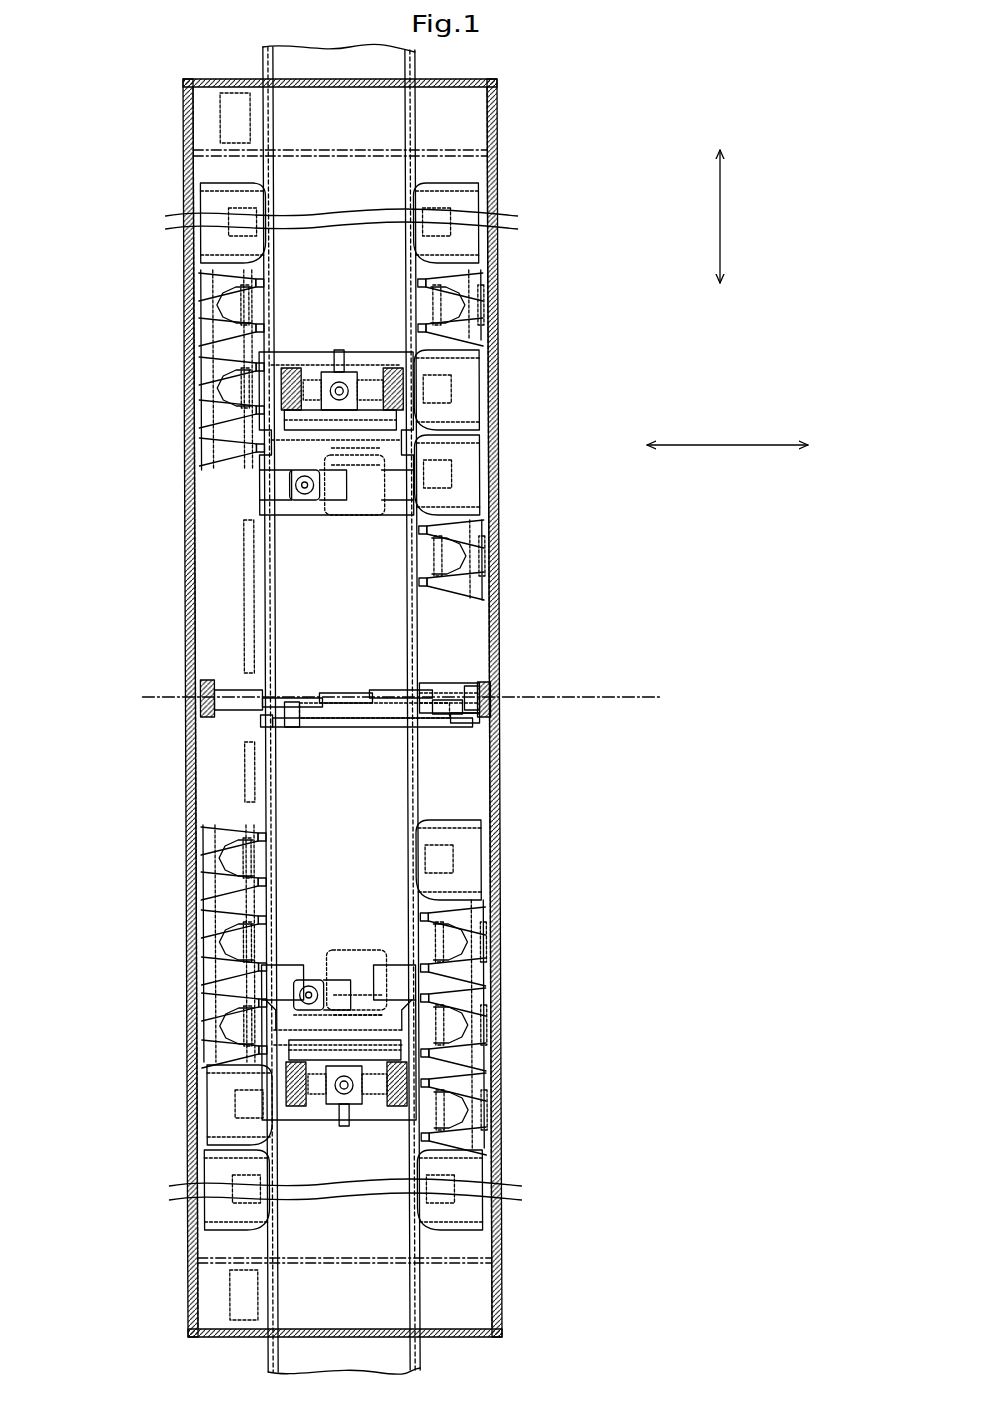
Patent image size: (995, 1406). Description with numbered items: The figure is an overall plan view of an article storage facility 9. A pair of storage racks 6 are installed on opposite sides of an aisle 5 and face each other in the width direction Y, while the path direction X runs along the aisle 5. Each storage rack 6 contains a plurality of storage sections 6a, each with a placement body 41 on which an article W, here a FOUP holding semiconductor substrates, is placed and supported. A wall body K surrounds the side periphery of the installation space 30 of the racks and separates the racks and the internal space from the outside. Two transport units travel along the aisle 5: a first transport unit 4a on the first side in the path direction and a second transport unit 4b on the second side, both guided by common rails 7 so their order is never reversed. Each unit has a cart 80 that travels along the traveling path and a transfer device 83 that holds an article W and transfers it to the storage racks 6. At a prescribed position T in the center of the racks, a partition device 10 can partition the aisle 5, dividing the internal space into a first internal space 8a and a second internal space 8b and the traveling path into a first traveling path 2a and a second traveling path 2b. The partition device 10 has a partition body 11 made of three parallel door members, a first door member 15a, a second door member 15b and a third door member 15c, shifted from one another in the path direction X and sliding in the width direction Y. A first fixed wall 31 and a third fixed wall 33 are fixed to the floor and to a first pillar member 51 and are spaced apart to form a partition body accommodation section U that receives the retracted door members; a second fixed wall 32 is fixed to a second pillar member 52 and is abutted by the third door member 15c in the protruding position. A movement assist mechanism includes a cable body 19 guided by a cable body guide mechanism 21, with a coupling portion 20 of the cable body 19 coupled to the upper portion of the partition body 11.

The article storage facility 9 is at (150, 161).
The second traveling path 2b is at (267, 97).
The first traveling path 2a is at (282, 1316).
The rails 7 is at (270, 826).
The second internal space 8b is at (372, 134).
The first internal space 8a is at (374, 1247).
The installation space 30 is at (489, 97).
The storage rack 6 is at (462, 132).
The aisle 5 is at (340, 186).
The placement body 41 is at (226, 284).
The second transport unit 4b is at (322, 352).
The first transport unit 4a is at (420, 1162).
The cart 80 is at (385, 358).
The article W is at (465, 372).
The wall body K is at (210, 440).
The storage section 6a is at (222, 590).
The partition body 11 is at (312, 612).
The transfer device 83 is at (348, 492).
The first door member 15a is at (395, 690).
The second door member 15b is at (350, 694).
The third door member 15c is at (310, 699).
The partition body accommodation section U is at (448, 688).
The first fixed wall 31 is at (468, 686).
The third fixed wall 33 is at (486, 684).
The second pillar member 52 is at (202, 684).
The prescribed position T is at (413, 701).
The second fixed wall 32 is at (256, 722).
The first pillar member 51 is at (458, 723).
The coupling portion 20 is at (273, 742).
The cable body 19 is at (358, 729).
The partition device 10 is at (390, 712).
The cable body guide mechanism 21 is at (455, 718).
The path direction X is at (724, 217).
The width direction Y is at (726, 438).